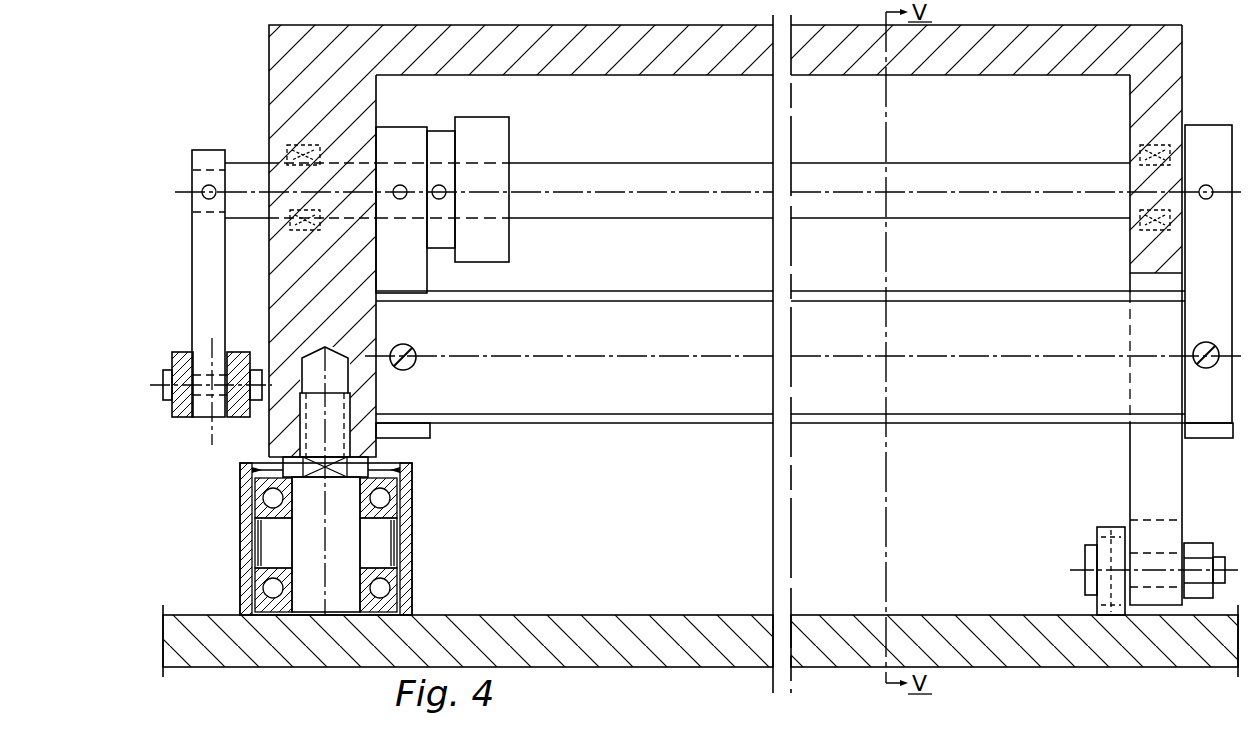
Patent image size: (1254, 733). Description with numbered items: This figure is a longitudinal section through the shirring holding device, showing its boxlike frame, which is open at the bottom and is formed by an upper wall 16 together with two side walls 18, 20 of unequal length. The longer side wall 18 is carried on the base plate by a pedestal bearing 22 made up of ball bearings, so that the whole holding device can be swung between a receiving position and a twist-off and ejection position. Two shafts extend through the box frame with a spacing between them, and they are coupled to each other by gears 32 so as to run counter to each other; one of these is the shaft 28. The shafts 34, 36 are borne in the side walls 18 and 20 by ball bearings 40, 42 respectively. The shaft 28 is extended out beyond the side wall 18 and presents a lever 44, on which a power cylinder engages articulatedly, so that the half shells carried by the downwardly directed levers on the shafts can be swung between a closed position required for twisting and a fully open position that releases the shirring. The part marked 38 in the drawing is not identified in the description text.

The top frame bar 16 is at (1003, 62).
The left frame block 18 is at (285, 82).
The right frame wall / arm 20 is at (1163, 120).
The bearing housing 22 is at (412, 528).
The shaft 28 is at (626, 173).
The collar block 32 is at (500, 146).
The collar 34 is at (420, 280).
The guide member 36 is at (1200, 274).
The pivot bolt 38 is at (987, 400).
The set screw 40 is at (288, 153).
The set screw 42 is at (1142, 158).
The pivot arm 44 is at (207, 268).